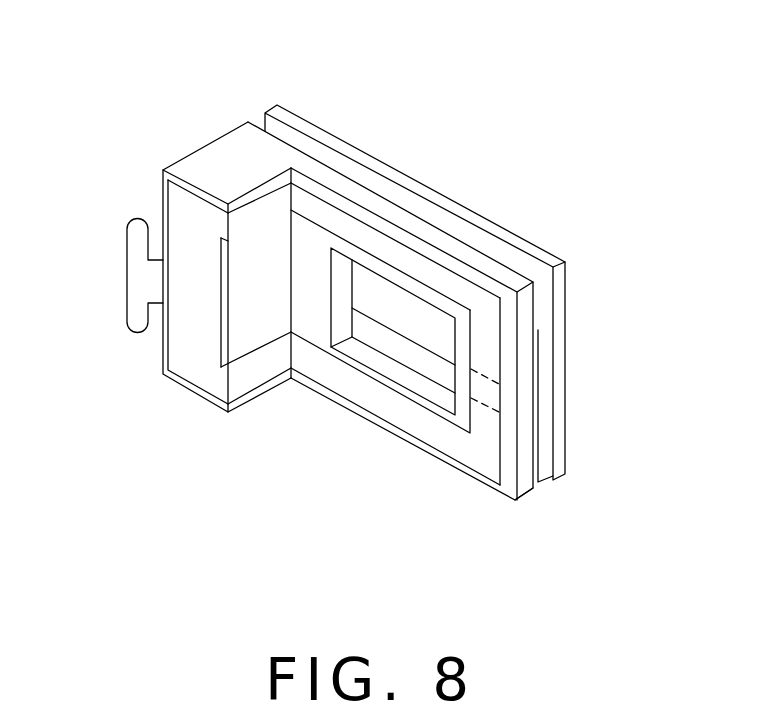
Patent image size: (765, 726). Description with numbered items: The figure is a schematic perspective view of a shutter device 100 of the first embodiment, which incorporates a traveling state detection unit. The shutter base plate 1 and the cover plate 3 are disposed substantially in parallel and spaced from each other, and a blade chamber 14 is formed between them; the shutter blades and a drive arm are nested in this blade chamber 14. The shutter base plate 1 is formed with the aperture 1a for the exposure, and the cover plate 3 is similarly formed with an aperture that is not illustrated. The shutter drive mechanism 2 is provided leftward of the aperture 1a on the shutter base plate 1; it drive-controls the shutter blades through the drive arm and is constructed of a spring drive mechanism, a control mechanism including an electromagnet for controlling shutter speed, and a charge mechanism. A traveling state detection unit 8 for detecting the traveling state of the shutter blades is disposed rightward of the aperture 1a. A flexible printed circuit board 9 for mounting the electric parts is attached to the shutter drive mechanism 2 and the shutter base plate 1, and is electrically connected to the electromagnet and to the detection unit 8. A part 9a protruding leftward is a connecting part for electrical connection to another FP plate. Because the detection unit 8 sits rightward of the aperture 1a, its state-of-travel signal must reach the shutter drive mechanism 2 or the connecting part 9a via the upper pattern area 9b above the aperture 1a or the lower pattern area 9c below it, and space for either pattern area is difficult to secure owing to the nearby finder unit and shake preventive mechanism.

The shutter device 100 is at (400, 96).
The shutter base plate 1 is at (523, 490).
The aperture 1a is at (372, 357).
The shutter drive mechanism 2 is at (215, 152).
The cover plate 3 is at (557, 449).
The traveling state detection unit 8 is at (497, 392).
The flexible printed circuit board 9 is at (197, 377).
The connecting part 9a is at (126, 289).
The upper pattern area 9b is at (397, 254).
The lower pattern area 9c is at (398, 427).
The blade chamber 14 is at (545, 313).